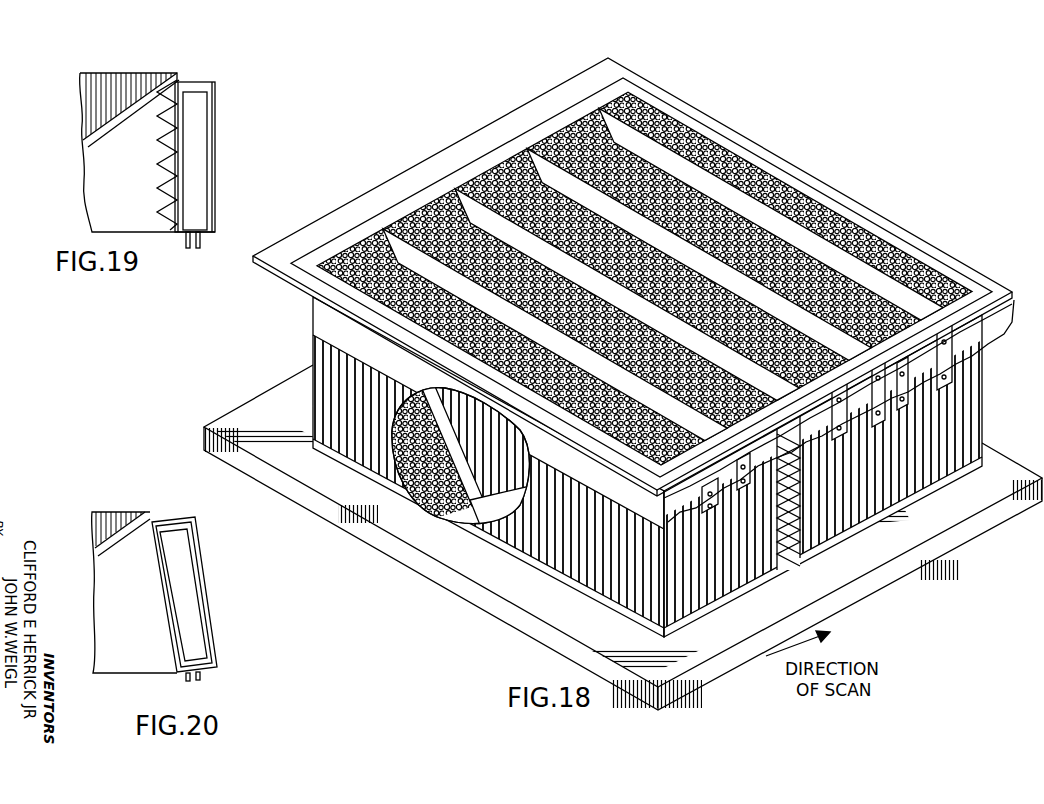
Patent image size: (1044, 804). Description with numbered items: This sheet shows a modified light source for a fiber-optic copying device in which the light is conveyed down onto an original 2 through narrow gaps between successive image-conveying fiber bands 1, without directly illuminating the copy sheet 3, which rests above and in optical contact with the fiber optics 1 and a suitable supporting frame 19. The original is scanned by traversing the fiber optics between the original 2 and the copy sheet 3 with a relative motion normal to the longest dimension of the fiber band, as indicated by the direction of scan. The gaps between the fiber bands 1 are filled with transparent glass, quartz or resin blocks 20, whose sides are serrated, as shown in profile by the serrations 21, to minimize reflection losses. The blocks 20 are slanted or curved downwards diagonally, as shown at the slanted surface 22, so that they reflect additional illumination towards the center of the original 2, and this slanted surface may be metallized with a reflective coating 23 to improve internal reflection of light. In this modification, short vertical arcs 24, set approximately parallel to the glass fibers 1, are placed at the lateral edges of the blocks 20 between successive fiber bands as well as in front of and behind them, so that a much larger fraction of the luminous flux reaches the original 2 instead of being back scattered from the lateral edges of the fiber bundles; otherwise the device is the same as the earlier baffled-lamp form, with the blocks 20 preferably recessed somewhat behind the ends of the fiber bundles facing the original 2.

In FIG. 18, the fiber bands 1 is at (757, 173).
In FIG. 18, the original 2 is at (497, 572).
In FIG. 18, the copy sheet 3 is at (548, 108).
In FIG. 18, the supporting frame 19 is at (463, 180).
In FIG. 18, the blocks 20 is at (638, 160).
In FIG. 18, the serrations 21 is at (787, 532).
In FIG. 19, the serrations 21 is at (173, 118).
In FIG. 18, the slanted surface 22 is at (905, 316).
In FIG. 19, the slanted surface 22 is at (88, 143).
In FIG. 20, the slanted surface 22 is at (134, 592).
In FIG. 19, the reflective coating 23 is at (173, 73).
In FIG. 19, the short vertical arcs 24 is at (193, 160).
In FIG. 20, the short vertical arcs 24 is at (183, 590).